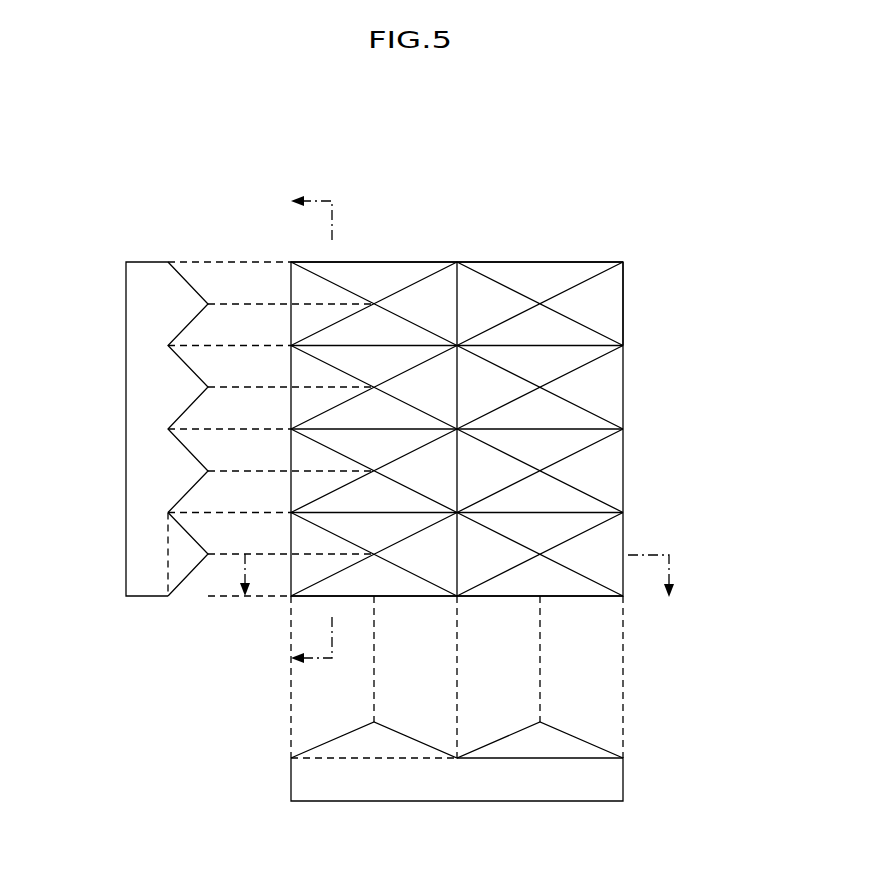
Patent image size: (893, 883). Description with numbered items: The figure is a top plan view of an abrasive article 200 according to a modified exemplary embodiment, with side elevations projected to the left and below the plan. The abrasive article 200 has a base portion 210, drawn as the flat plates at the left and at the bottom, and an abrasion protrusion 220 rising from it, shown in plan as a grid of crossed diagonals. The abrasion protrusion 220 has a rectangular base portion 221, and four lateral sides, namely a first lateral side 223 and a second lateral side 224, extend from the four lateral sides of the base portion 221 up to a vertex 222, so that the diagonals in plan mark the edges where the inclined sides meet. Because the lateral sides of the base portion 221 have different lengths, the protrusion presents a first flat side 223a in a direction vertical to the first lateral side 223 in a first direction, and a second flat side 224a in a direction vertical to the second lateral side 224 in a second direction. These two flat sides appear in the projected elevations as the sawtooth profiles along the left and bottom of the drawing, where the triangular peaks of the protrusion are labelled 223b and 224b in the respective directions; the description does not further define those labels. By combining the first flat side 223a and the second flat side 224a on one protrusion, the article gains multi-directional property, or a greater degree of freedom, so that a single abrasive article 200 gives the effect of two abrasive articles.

The abrasive article 200 is at (692, 605).
The base portion 210 is at (126, 430).
The abrasion protrusion 220 is at (625, 392).
The rectangular base portion 221 is at (318, 598).
The vertex 222 is at (600, 468).
The first lateral side 223 is at (600, 300).
The first flat side 223a is at (168, 556).
The first pattern ridge 223b is at (183, 285).
The second lateral side 224 is at (542, 275).
The second flat side 224a is at (333, 760).
The second pattern ridge 224b is at (310, 750).